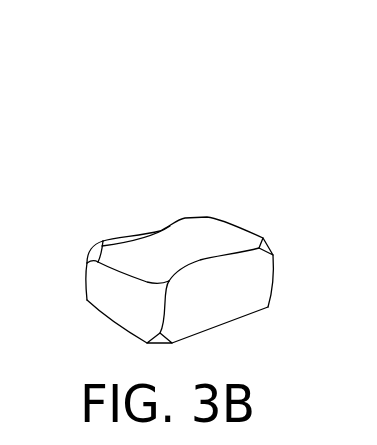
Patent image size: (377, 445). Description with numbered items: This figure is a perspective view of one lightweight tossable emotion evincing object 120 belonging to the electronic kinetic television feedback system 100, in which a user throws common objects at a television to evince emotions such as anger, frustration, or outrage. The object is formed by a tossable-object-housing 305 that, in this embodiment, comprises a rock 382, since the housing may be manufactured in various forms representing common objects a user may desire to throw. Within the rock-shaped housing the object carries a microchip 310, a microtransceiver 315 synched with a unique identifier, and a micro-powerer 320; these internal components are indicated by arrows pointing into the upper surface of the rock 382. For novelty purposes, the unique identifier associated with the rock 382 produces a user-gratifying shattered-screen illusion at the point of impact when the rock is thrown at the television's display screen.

The electronic kinetic television feedback system 100 is at (149, 92).
The lightweight tossable emotion evincing object 120 is at (185, 120).
The tossable-object-housing 305 is at (156, 226).
The microchip 310 is at (205, 243).
The microtransceiver 315 is at (193, 238).
The micro-powerer 320 is at (182, 237).
The rock 382 is at (229, 304).